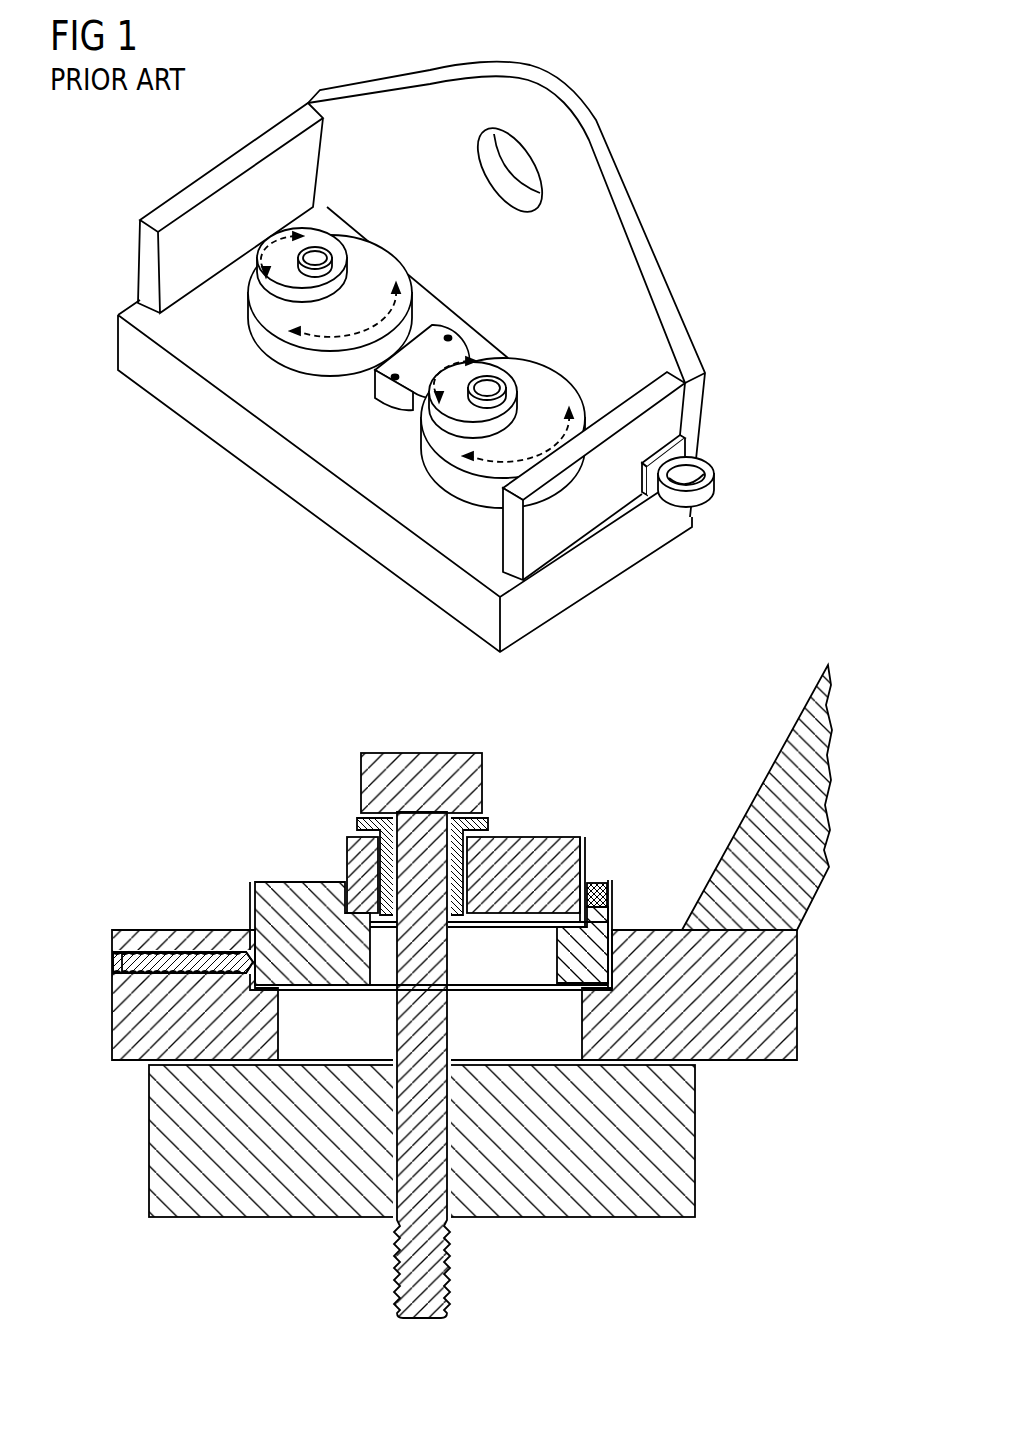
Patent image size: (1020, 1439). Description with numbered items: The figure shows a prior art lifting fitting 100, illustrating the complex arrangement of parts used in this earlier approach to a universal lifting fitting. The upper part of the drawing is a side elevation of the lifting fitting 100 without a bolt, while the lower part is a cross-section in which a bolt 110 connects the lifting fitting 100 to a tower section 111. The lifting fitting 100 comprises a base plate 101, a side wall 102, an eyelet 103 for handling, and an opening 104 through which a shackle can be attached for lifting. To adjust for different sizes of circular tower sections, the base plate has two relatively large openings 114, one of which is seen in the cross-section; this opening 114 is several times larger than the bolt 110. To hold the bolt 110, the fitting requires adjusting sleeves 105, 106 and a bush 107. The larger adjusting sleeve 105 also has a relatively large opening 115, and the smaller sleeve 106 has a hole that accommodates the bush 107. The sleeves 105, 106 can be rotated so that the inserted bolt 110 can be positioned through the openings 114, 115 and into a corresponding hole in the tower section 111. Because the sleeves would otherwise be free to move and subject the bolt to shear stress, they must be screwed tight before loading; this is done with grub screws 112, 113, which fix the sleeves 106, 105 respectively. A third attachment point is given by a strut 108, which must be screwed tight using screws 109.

The lifting fitting 100 is at (258, 518).
The base plate 101 is at (610, 553).
The side wall 102 is at (630, 220).
The eyelet 103 is at (710, 470).
The opening 104 is at (490, 168).
The larger adjusting sleeve 105 is at (380, 270).
The smaller adjusting sleeve 106 is at (280, 295).
The bush 107 is at (333, 253).
The strut 108 is at (390, 393).
The screws 109 is at (395, 377).
The bolt 110 is at (361, 773).
The tower section 111 is at (692, 1140).
The grub screw 112 is at (598, 882).
The grub screw 113 is at (118, 963).
The opening 114 is at (540, 1038).
The opening 115 is at (537, 953).